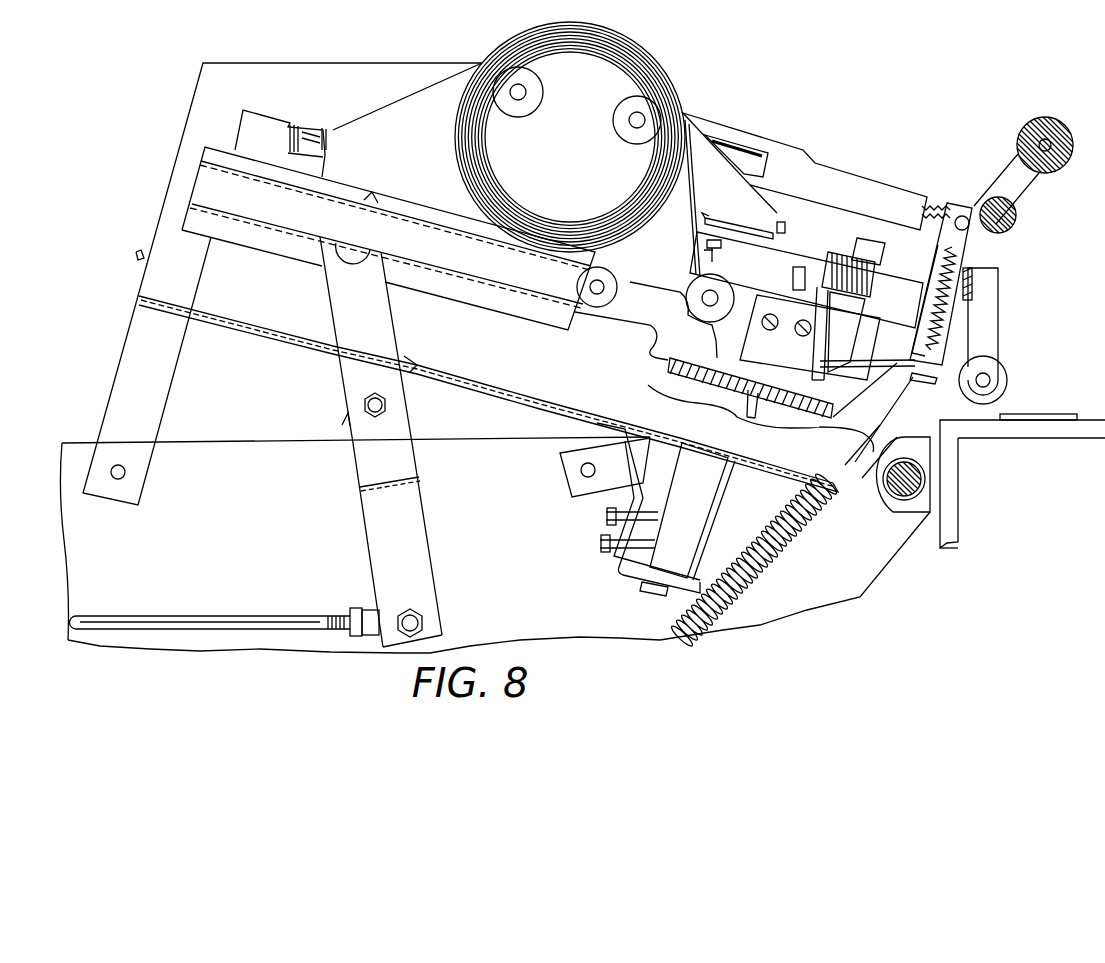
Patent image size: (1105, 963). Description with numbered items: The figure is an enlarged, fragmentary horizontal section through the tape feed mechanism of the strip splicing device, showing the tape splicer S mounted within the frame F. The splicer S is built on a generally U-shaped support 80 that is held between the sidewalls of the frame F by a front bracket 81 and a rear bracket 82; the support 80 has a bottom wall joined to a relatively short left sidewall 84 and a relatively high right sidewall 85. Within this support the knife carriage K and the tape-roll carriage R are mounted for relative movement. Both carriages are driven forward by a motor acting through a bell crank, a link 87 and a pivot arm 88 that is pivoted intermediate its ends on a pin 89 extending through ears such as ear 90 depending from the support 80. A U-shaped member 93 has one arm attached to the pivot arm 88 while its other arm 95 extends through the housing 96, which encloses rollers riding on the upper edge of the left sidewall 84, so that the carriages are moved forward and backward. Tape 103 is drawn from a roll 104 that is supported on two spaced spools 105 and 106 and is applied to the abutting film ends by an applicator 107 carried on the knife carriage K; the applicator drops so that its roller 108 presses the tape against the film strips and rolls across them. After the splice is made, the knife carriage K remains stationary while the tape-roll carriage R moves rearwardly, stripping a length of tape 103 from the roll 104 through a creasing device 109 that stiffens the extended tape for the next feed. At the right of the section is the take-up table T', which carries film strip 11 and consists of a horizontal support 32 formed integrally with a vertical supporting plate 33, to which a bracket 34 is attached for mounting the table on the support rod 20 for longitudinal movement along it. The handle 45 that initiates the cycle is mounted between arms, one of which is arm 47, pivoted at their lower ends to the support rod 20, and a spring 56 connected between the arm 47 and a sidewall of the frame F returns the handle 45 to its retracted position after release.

The right sidewall 85 is at (213, 88).
The U-shaped support 80 is at (200, 119).
The left sidewall 84 is at (172, 219).
The housing 96 is at (432, 228).
The arm 95 is at (387, 327).
The U-shaped member 93 is at (410, 469).
The pivot arm 88 is at (430, 567).
The pin 89 is at (375, 393).
The ear 90 is at (419, 380).
The rear bracket 82 is at (138, 484).
The front bracket 81 is at (572, 484).
The link 87 is at (268, 616).
The roll 104 is at (656, 62).
The spool 105 is at (518, 110).
The spool 106 is at (625, 131).
The tape 103 is at (695, 190).
The tape splicer S is at (834, 162).
The creasing device 109 is at (848, 332).
The tape-roll carriage R is at (698, 370).
The knife carriage K is at (812, 436).
The spring 56 is at (800, 544).
The bracket 34 is at (920, 502).
The support rod 20 is at (895, 492).
The horizontal support 32 is at (1005, 436).
The take-up table T' is at (1031, 464).
The vertical supporting plate 33 is at (952, 523).
The film strip 11 is at (1052, 414).
The applicator 107 is at (996, 338).
The roller 108 is at (1008, 378).
The arm 47 is at (1012, 172).
The handle 45 is at (1037, 120).
The frame F is at (580, 630).